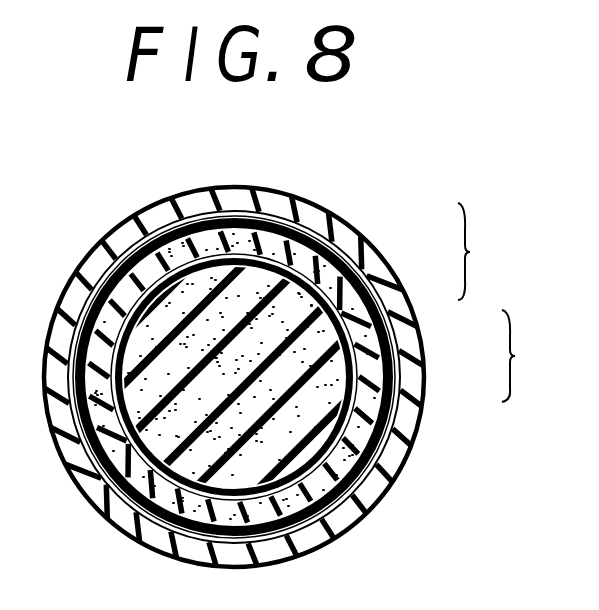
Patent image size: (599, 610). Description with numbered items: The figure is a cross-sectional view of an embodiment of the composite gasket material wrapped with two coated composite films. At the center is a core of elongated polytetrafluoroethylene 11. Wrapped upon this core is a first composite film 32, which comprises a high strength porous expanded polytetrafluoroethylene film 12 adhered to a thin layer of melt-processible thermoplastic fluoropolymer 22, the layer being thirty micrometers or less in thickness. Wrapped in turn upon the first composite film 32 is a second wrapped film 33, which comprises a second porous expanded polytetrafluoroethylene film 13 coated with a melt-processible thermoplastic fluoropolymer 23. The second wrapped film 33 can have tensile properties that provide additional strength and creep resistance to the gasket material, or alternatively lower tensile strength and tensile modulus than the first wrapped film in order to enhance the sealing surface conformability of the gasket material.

The core of elongated polytetrafluoroethylene 11 is at (305, 447).
The high strength porous expanded polytetrafluoroethylene film 12 is at (345, 288).
The thin layer of melt-processible thermoplastic fluoropolymer 22 is at (358, 302).
The composite film 32 is at (484, 251).
The second porous expanded polytetrafluoroethylene film 13 is at (416, 383).
The melt-processible thermoplastic fluoropolymer 23 is at (390, 408).
The second wrapped film 33 is at (530, 356).